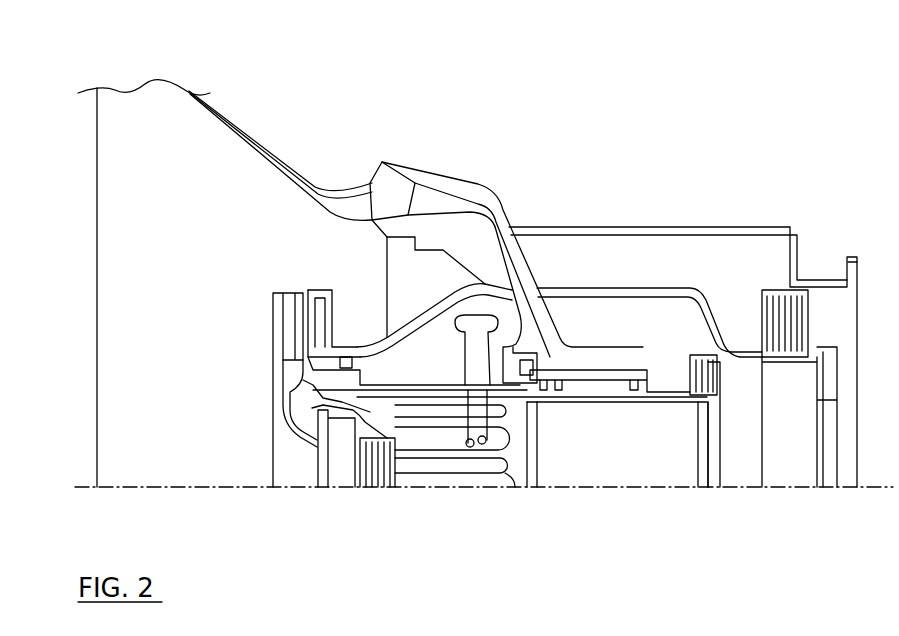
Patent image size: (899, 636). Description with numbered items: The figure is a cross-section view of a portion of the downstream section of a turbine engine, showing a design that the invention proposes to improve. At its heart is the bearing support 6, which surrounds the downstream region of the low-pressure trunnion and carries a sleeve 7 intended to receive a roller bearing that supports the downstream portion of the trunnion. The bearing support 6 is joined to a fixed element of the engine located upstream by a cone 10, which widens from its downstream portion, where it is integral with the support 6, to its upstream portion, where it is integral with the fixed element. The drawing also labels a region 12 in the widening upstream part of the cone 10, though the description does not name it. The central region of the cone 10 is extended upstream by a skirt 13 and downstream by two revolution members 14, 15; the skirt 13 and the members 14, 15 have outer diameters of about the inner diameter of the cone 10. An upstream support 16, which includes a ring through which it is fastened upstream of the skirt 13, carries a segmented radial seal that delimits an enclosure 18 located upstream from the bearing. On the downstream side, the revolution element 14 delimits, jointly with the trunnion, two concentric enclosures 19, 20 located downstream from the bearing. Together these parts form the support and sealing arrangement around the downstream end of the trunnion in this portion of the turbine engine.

The bearing support 6 is at (594, 100).
The sleeve 7 is at (658, 458).
The cone 10 is at (133, 222).
The inlet cone region 12 is at (378, 120).
The skirt 13 is at (415, 320).
The revolution member 14 is at (625, 288).
The revolution member 15 is at (600, 228).
The upstream support 16 is at (305, 289).
The enclosure 18 is at (437, 480).
The concentric enclosure 19 is at (678, 323).
The concentric enclosure 20 is at (738, 263).